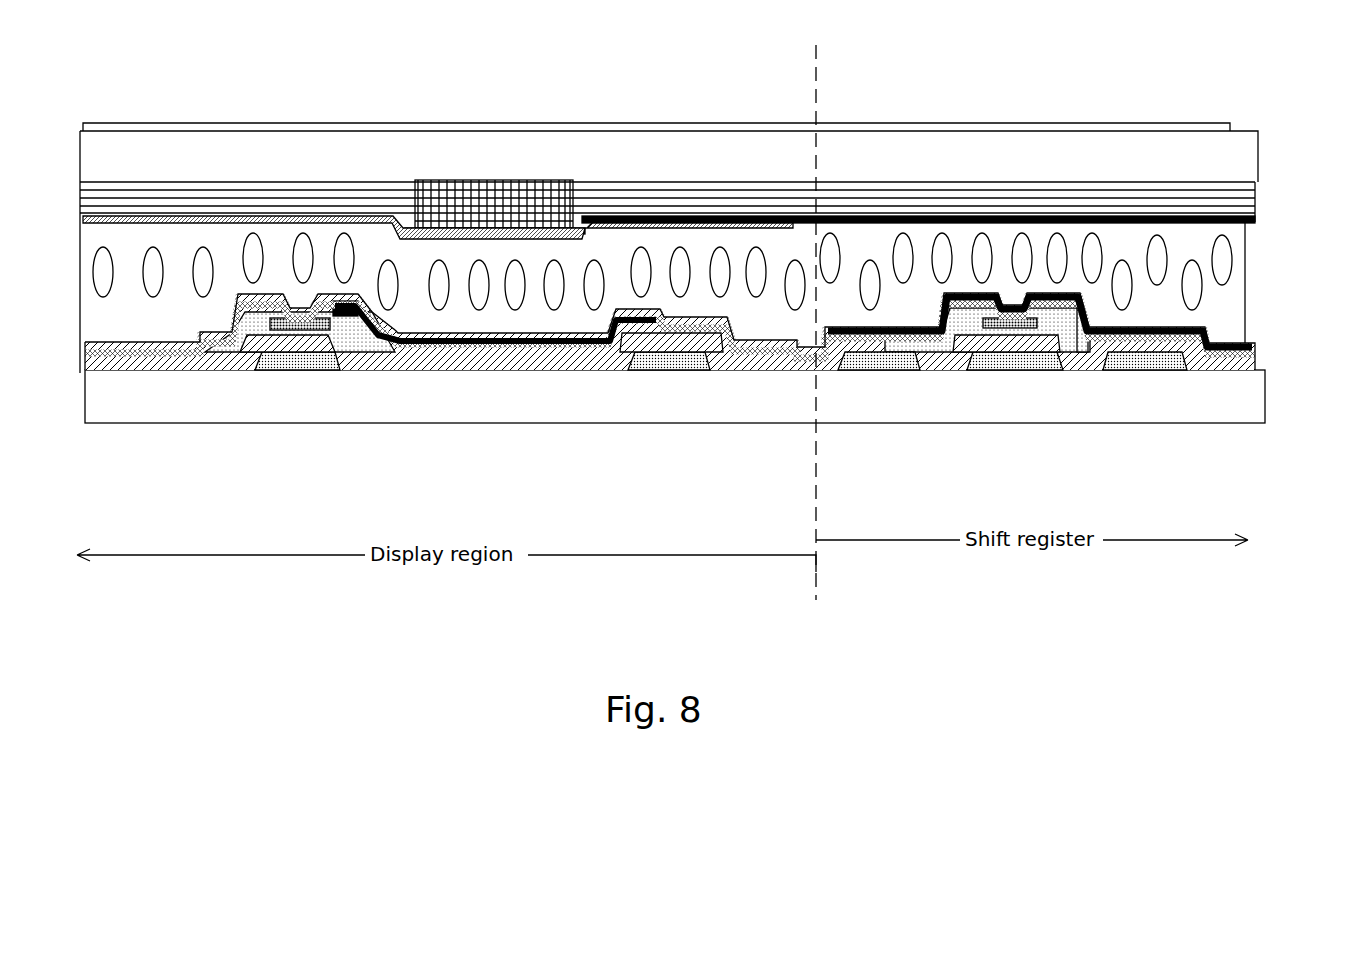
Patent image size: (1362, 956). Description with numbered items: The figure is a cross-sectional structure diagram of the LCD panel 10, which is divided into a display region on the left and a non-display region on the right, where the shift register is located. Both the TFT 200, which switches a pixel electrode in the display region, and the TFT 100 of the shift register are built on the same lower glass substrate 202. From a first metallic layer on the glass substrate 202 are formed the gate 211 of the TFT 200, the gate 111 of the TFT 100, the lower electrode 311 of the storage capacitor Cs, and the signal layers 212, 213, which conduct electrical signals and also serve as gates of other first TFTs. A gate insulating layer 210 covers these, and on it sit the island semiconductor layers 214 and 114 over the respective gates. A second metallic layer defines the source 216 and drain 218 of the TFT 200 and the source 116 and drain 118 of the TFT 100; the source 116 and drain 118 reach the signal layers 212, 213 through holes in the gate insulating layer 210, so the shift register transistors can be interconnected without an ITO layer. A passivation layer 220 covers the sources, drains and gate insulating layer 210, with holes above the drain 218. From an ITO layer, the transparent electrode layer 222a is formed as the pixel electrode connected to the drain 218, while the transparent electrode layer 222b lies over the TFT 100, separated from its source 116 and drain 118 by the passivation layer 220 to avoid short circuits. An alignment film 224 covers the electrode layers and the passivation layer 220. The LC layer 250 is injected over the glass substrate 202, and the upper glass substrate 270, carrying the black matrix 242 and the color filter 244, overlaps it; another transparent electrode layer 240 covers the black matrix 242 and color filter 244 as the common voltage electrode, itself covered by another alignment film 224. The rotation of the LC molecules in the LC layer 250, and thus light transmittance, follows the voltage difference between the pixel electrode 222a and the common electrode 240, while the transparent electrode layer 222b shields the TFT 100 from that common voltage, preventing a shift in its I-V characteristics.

The LCD panel 10 is at (665, 30).
The TFT 100 is at (1027, 412).
The gate 111 is at (998, 362).
The island semiconductor layer 114 is at (1027, 327).
The source 116 is at (935, 348).
The drain 118 is at (1123, 385).
The TFT 200 is at (336, 407).
The glass substrate 202 is at (1232, 408).
The gate insulating layer 210 is at (462, 362).
The gate 211 is at (287, 365).
The signal layer 212 is at (873, 365).
The signal layer 213 is at (1138, 365).
The island semiconductor layer 214 is at (317, 323).
The source 216 is at (220, 343).
The drain 218 is at (400, 381).
The passivation layer 220 is at (1237, 340).
The transparent electrode layer 222a is at (523, 345).
The transparent electrode layer 222b is at (1077, 300).
The alignment film 224 is at (165, 215).
The transparent electrode layer 240 is at (1255, 215).
The black matrix 242 is at (722, 200).
The color filter 244 is at (510, 190).
The LC layer 250 is at (1225, 265).
The glass substrate 270 is at (1240, 150).
The lower electrode 311 is at (662, 365).
The storage capacitor Cs is at (693, 373).